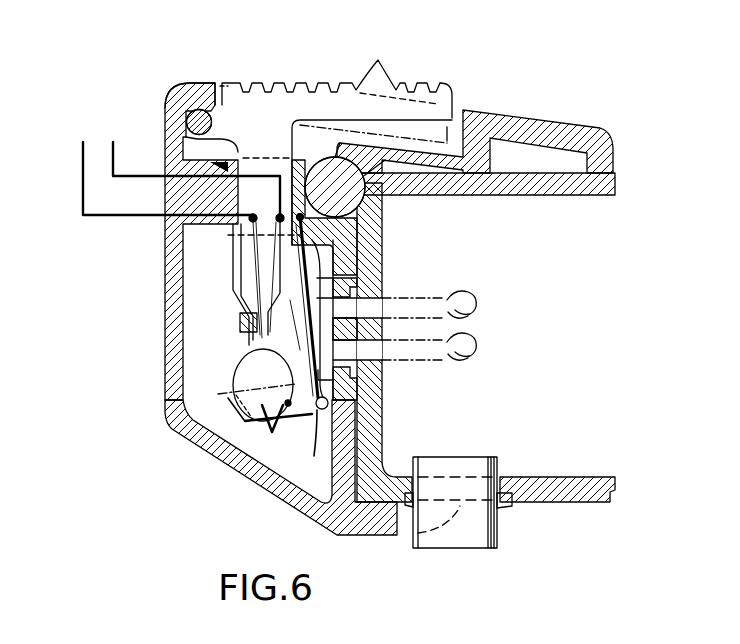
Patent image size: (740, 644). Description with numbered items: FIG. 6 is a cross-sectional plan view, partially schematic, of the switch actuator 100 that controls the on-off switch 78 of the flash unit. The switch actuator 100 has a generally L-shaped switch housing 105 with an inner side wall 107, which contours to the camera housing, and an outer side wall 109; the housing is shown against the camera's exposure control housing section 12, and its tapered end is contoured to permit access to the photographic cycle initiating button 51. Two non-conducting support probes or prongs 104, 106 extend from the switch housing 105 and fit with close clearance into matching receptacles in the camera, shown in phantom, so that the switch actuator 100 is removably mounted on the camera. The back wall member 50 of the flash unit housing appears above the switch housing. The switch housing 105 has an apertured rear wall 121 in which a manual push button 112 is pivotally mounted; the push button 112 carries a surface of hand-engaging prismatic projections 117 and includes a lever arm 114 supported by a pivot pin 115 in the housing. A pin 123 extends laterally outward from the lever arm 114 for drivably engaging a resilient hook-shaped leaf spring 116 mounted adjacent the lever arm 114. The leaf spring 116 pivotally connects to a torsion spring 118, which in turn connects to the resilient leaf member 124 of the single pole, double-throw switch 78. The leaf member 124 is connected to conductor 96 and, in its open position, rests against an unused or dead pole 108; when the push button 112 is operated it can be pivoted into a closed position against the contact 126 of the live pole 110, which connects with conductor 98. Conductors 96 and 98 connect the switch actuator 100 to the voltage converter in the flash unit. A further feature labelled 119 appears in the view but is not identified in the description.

The exposure control housing section 12 is at (560, 503).
The back wall member 50 is at (518, 195).
The photographic cycle initiating button 51 is at (499, 547).
The on-off switch 78 is at (244, 343).
The conductor 96 is at (78, 168).
The conductor 98 is at (116, 163).
The switch actuator 100 is at (217, 309).
The support probe 104 is at (485, 362).
The switch housing 105 is at (160, 356).
The support probe 106 is at (484, 316).
The inner side wall 107 is at (360, 243).
The dead pole 108 is at (238, 315).
The outer side wall 109 is at (165, 314).
The live pole 110 is at (277, 215).
The manual push button 112 is at (441, 84).
The lever arm 114 is at (338, 280).
The pivot pin 115 is at (187, 113).
The leaf spring 116 is at (314, 440).
The prismatic projections 117 is at (228, 422).
The torsion spring 118 is at (276, 427).
The axis 119 is at (232, 388).
The apertured rear wall 121 is at (200, 82).
The pin 123 is at (328, 403).
The resilient leaf member 124 is at (250, 362).
The contact 126 is at (270, 330).